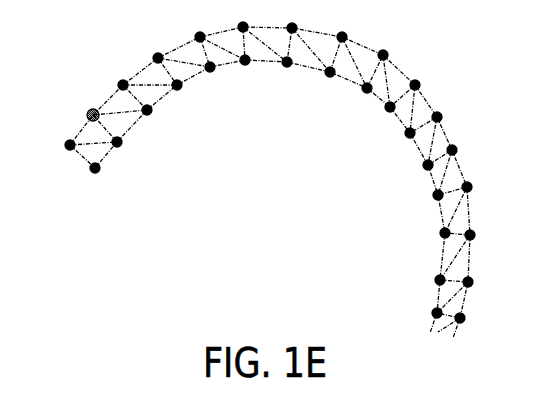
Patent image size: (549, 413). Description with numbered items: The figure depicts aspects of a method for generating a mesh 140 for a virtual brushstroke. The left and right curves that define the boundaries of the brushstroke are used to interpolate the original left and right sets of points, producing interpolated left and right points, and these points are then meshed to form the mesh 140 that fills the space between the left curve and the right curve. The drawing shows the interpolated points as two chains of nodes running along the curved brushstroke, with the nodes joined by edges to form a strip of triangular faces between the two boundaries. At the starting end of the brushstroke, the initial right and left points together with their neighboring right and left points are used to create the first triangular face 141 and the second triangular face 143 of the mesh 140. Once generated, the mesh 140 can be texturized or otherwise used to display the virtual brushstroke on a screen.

The mesh 140 is at (308, 169).
The first triangular face 141 is at (89, 154).
The second triangular face 143 is at (95, 112).